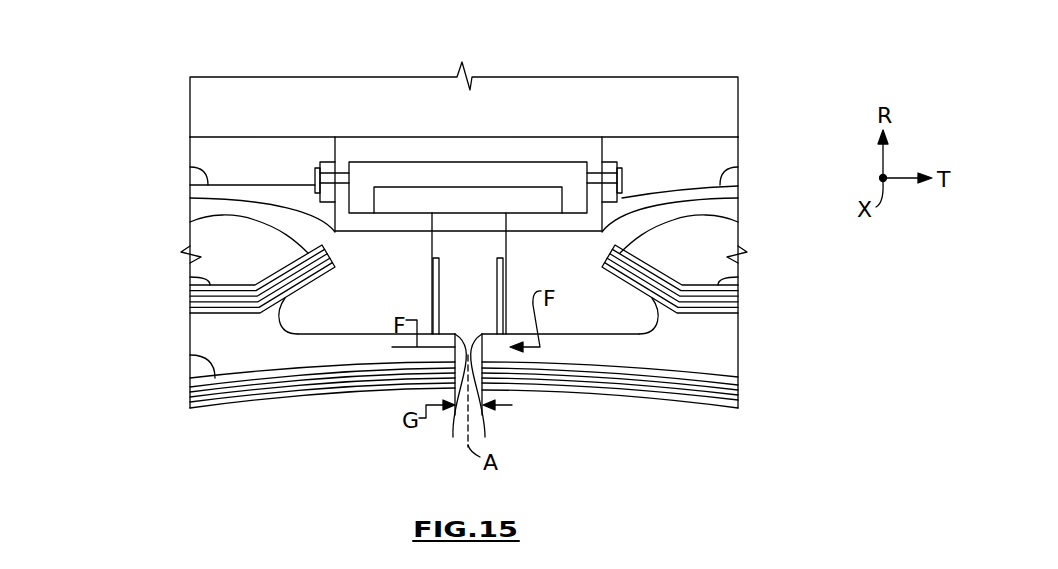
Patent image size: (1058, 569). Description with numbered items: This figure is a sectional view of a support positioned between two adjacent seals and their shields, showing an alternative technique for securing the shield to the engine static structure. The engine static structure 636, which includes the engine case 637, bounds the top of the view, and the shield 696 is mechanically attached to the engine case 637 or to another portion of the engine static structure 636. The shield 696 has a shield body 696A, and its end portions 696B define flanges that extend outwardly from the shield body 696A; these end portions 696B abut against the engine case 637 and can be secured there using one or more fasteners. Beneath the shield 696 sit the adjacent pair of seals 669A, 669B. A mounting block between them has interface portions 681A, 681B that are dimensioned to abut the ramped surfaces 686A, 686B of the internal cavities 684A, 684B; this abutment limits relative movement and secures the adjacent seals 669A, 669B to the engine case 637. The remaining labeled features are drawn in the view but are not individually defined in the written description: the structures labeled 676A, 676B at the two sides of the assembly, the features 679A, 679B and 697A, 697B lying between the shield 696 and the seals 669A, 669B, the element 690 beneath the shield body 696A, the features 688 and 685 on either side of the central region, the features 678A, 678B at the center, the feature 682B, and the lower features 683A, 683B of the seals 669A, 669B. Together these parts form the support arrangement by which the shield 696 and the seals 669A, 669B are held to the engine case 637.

The engine static structure 636 is at (464, 89).
The engine case 637 is at (215, 90).
The first panel assembly 676A is at (155, 138).
The second panel assembly 676B is at (774, 138).
The shield 696 is at (190, 167).
The shield body 696A is at (230, 184).
The end portions 696B is at (328, 162).
The attachment member 690 is at (502, 176).
The first layer 679A is at (190, 222).
The second layer 679B is at (738, 221).
The first cavity 697A is at (267, 259).
The second cavity 697B is at (719, 259).
The seal 669A is at (190, 277).
The seal 669B is at (738, 277).
The interface portion 681A is at (300, 316).
The interface portion 681B is at (636, 316).
The ramped surface 686A is at (317, 278).
The ramped surface 686B is at (616, 278).
The first seal 688 is at (433, 242).
The second seal 685 is at (467, 352).
The first slot wall 678A is at (455, 430).
The second slot wall 678B is at (486, 432).
The internal cavity 684A is at (190, 355).
The internal cavity 684B is at (738, 355).
The intermediate layer 682B is at (372, 340).
The first inner skin 683A is at (260, 402).
The second inner skin 683B is at (628, 394).